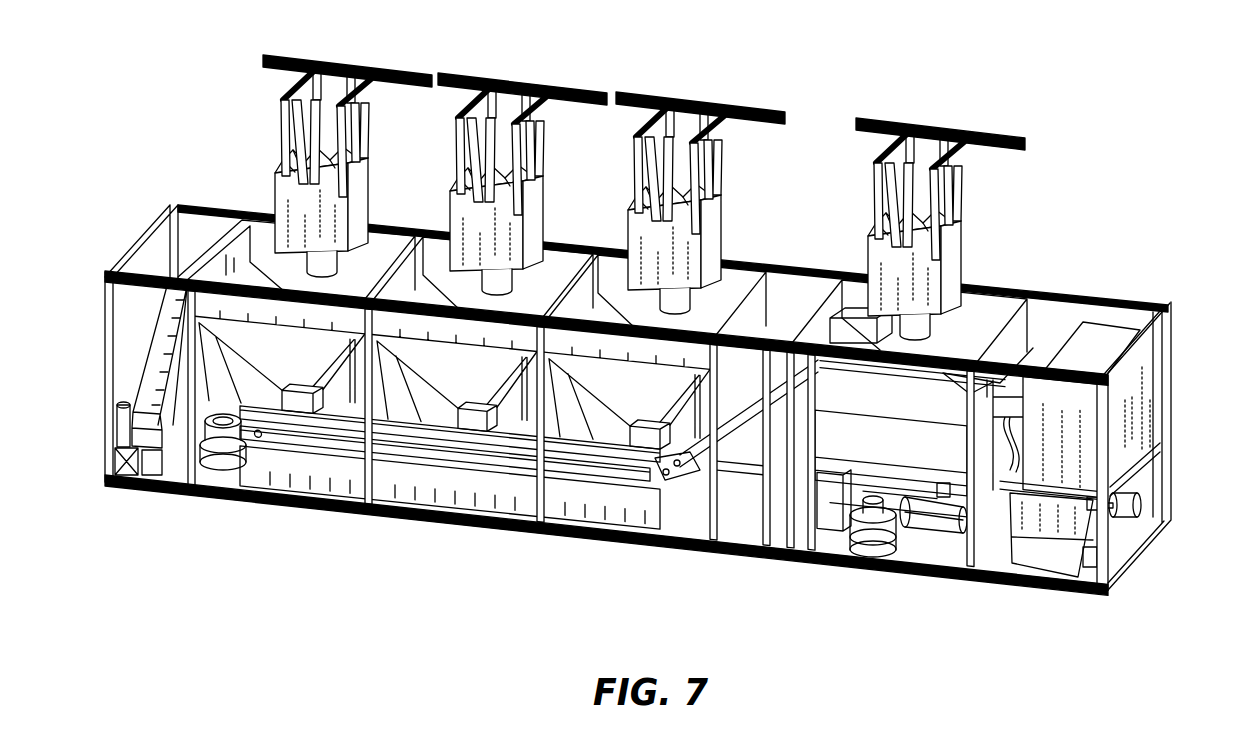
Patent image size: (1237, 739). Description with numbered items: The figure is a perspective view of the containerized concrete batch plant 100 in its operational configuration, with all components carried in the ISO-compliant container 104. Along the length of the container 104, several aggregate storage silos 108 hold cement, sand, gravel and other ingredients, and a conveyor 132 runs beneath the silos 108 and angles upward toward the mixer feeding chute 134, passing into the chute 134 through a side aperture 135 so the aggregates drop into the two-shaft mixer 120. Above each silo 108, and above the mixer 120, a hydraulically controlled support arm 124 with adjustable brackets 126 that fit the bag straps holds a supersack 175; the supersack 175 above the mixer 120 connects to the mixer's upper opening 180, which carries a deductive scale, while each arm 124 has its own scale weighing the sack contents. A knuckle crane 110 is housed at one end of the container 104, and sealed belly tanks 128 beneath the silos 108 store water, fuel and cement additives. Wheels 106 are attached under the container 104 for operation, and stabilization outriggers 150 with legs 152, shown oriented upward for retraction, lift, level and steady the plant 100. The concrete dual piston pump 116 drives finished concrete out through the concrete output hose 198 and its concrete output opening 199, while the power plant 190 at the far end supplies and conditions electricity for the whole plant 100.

The containerized concrete batch plant 100 is at (634, 338).
The container 104 is at (1162, 308).
The wheels 106 is at (237, 472).
The aggregate storage silos 108 is at (277, 366).
The knuckle crane 110 is at (153, 347).
The concrete dual piston pump 116 is at (947, 523).
The two-shaft mixer 120 is at (913, 456).
The hydraulically controlled support arm 124 is at (356, 60).
The adjustable brackets 126 is at (303, 76).
The sealed belly tanks 128 is at (510, 493).
The conveyor 132 is at (703, 457).
The mixer feeding chute 134 is at (865, 308).
The side aperture 135 is at (825, 314).
The stabilization outriggers 150 is at (126, 480).
The legs 152 is at (128, 434).
The supersack 175 is at (962, 262).
The upper opening 180 is at (962, 332).
The power plant 190 is at (1108, 358).
The concrete output hose 198 is at (1112, 510).
The concrete output opening 199 is at (1137, 502).